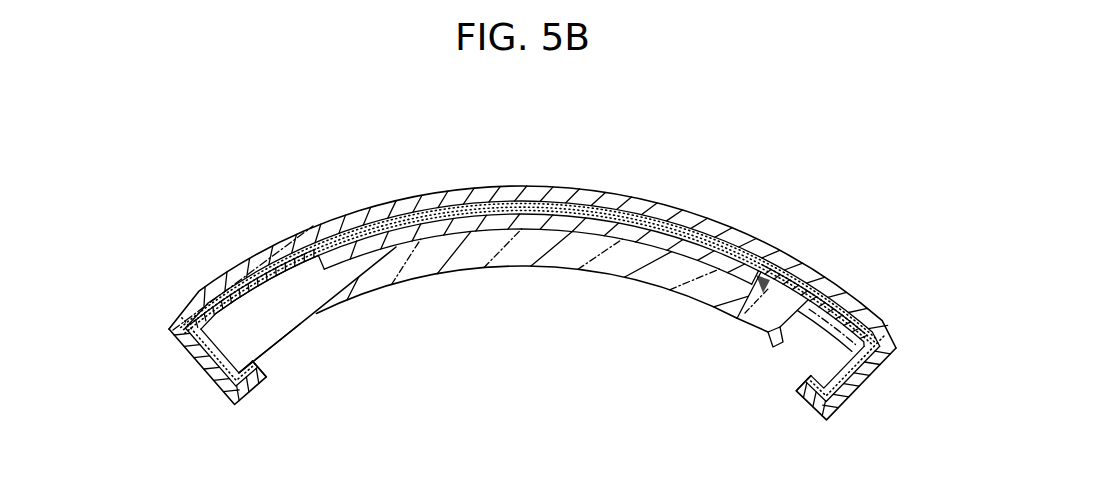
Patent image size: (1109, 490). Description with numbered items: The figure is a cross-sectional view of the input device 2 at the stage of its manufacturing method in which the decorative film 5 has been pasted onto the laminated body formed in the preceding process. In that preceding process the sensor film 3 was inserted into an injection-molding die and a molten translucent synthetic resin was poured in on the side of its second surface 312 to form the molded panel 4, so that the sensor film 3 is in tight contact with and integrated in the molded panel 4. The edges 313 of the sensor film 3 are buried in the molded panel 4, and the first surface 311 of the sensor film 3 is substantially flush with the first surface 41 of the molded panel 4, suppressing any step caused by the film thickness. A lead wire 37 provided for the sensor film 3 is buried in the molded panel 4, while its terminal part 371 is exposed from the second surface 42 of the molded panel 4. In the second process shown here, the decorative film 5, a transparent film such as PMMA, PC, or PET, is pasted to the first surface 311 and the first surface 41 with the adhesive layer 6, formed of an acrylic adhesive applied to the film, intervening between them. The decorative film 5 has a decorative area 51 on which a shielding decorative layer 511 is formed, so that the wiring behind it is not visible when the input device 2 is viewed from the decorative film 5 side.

The input device 2 is at (708, 146).
The sensor film 3 is at (536, 254).
The first surface of the sensor film 311 is at (528, 206).
The second surface of the sensor film 312 is at (528, 240).
The edges of the sensor film 313 is at (306, 280).
The molded panel 4 is at (273, 332).
The first surface of the molded panel 41 is at (273, 292).
The second surface of the molded panel 42 is at (280, 352).
The decorative film 5 is at (609, 200).
The decorative area 51 is at (318, 208).
The decorative layer 511 is at (183, 313).
The adhesive layer 6 is at (362, 232).
The lead wire 37 is at (753, 369).
The terminal part of the lead wire 371 is at (772, 348).